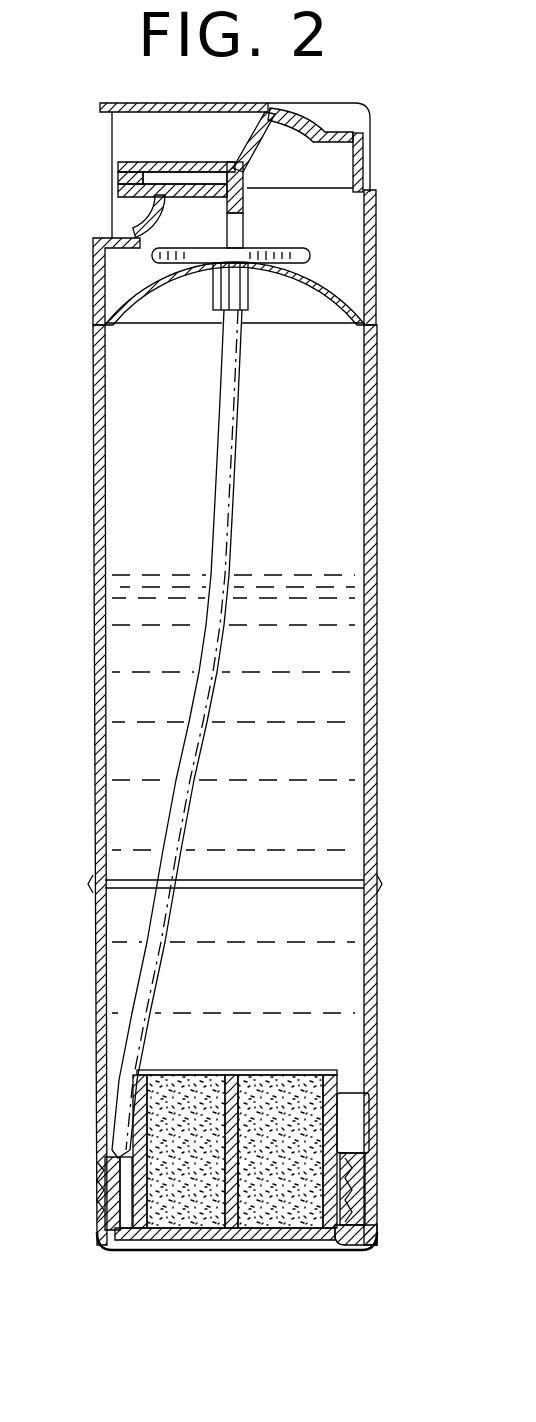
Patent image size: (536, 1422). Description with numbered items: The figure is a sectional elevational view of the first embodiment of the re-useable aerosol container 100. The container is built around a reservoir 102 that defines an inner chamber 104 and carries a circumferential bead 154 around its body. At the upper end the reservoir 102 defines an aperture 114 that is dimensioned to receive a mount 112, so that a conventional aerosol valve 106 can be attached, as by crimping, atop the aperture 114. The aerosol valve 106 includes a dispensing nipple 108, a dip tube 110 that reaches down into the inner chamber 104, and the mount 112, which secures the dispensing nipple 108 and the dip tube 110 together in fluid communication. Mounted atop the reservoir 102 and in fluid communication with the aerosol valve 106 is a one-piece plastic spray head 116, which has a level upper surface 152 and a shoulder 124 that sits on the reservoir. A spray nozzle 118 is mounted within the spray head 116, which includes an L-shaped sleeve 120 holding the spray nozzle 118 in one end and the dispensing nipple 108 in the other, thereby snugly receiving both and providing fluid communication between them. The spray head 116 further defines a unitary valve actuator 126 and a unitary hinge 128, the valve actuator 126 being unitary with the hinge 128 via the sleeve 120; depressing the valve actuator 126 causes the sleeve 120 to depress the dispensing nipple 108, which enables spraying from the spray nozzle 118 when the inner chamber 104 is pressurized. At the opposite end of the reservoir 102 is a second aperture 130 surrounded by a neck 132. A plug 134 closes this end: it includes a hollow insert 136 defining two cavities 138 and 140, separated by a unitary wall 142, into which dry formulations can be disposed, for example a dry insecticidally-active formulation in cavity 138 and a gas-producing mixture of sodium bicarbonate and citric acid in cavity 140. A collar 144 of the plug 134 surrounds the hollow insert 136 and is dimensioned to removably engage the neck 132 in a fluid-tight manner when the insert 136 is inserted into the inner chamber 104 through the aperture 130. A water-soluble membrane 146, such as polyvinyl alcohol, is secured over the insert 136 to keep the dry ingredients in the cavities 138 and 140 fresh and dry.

The re-useable aerosol container 100 is at (60, 549).
The reservoir 102 is at (372, 464).
The inner chamber 104 is at (307, 437).
The aerosol valve 106 is at (292, 240).
The dispensing nipple 108 is at (222, 234).
The dip tube 110 is at (223, 375).
The mount 112 is at (213, 293).
The aperture 114 is at (268, 270).
The spray head 116 is at (372, 274).
The spray nozzle 118 is at (112, 200).
The L-shaped sleeve 120 is at (247, 208).
The shoulder 124 is at (100, 311).
The valve actuator 126 is at (325, 110).
The hinge 128 is at (128, 228).
The aperture 130 is at (362, 1183).
The neck 132 is at (347, 1250).
The plug 134 is at (125, 1254).
The hollow insert 136 is at (337, 1110).
The cavity 138 is at (147, 1105).
The cavity 140 is at (318, 1112).
The unitary wall 142 is at (238, 1200).
The collar 144 is at (97, 1197).
The water-soluble membrane 146 is at (315, 1105).
The level upper surface 152 is at (137, 101).
The circumferential bead 154 is at (97, 886).